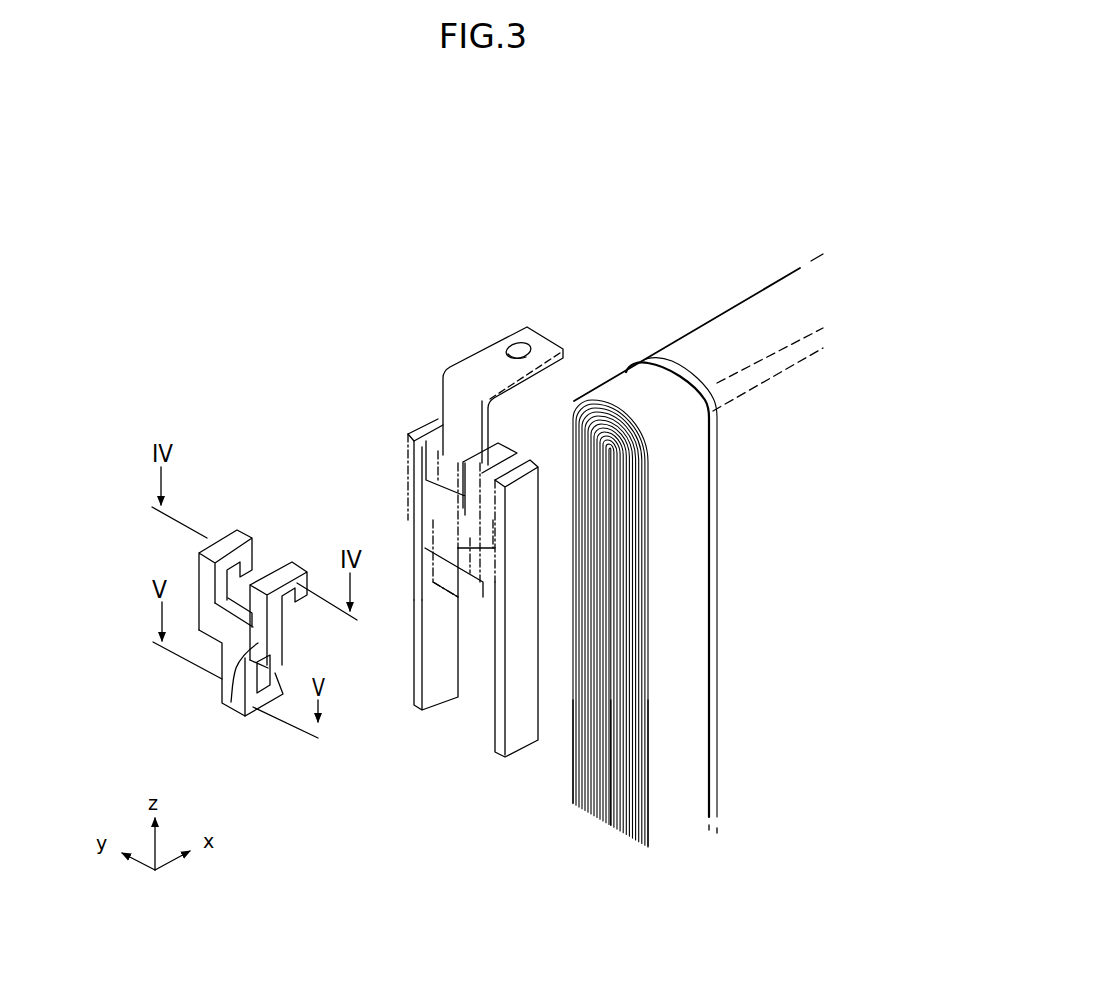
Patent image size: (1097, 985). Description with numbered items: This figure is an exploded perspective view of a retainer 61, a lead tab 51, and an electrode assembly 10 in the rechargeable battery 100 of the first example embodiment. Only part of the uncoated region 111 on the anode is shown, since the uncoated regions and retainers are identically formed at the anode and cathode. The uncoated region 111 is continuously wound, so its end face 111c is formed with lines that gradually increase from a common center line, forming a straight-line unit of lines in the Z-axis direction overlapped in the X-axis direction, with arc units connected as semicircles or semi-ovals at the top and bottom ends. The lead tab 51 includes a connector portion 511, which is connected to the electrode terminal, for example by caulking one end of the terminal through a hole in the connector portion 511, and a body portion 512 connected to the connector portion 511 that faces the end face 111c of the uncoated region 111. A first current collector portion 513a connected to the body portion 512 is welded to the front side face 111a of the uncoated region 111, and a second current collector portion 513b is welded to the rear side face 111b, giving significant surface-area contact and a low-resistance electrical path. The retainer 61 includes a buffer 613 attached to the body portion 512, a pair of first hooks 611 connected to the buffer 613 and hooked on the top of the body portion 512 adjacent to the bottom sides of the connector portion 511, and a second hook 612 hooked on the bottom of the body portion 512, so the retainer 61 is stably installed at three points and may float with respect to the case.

The rechargeable battery 100 is at (515, 134).
The electrode assembly 10 is at (729, 291).
The uncoated region 111 is at (700, 501).
The front side face 111a is at (683, 807).
The rear side face 111b is at (572, 777).
The end face 111c is at (612, 788).
The lead tab 51 is at (427, 366).
The connector portion 511 is at (487, 358).
The body portion 512 is at (416, 526).
The first current collector portion 513a is at (522, 738).
The second current collector portion 513b is at (442, 695).
The retainer 61 is at (183, 556).
The first hooks 611 is at (289, 563).
The second hook 612 is at (252, 714).
The buffer 613 is at (232, 704).